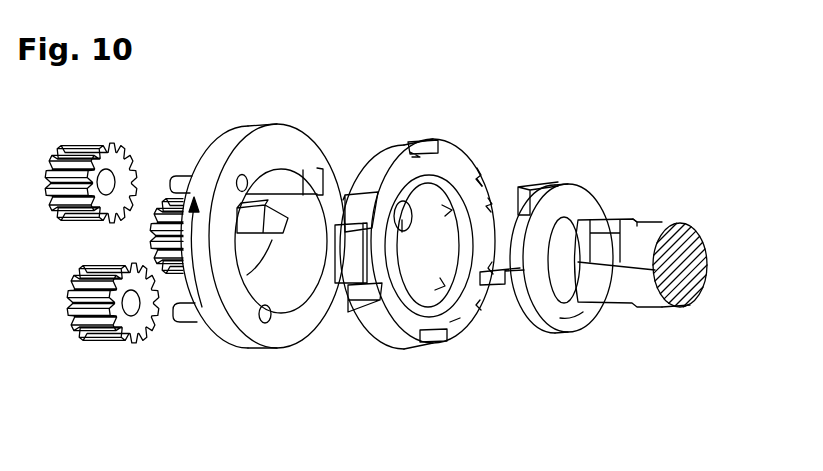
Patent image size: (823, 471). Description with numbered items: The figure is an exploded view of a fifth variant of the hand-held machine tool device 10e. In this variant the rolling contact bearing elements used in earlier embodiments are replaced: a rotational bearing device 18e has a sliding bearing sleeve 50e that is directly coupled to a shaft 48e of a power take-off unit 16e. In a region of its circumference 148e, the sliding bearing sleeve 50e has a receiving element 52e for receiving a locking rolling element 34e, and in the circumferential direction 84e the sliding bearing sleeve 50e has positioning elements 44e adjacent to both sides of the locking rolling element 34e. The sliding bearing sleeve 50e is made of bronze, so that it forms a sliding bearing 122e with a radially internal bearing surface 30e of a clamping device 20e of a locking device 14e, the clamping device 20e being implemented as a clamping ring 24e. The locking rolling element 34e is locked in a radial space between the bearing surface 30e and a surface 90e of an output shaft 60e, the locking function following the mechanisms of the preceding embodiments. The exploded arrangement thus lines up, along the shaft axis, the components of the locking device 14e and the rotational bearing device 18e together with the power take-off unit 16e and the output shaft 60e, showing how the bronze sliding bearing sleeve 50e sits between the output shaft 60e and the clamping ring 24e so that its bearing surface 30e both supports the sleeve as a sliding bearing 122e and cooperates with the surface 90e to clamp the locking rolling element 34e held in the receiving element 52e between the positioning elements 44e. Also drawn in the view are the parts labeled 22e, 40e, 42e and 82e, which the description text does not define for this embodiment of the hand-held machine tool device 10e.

The hand-held machine tool device 10e is at (616, 118).
The locking device 14e is at (352, 146).
The power take-off unit 16e is at (668, 263).
The rotational bearing device 18e is at (520, 162).
The clamping device 20e is at (434, 328).
The intermediate ring 22e is at (433, 190).
The clamping ring 24e is at (452, 322).
The radially internal bearing surface 30e is at (423, 276).
The locking rolling element 34e is at (355, 312).
The planet gears 40e is at (146, 358).
The stop 42e is at (231, 332).
The positioning elements 44e is at (312, 170).
The shaft 48e is at (690, 302).
The sliding bearing sleeve 50e is at (575, 315).
The receiving element 52e is at (500, 310).
The output shaft 60e is at (695, 258).
The keyway 82e is at (605, 248).
The circumferential direction 84e is at (192, 166).
The surface of output shaft 90e is at (656, 240).
The sliding bearing 122e is at (482, 160).
The circumference 148e is at (565, 188).